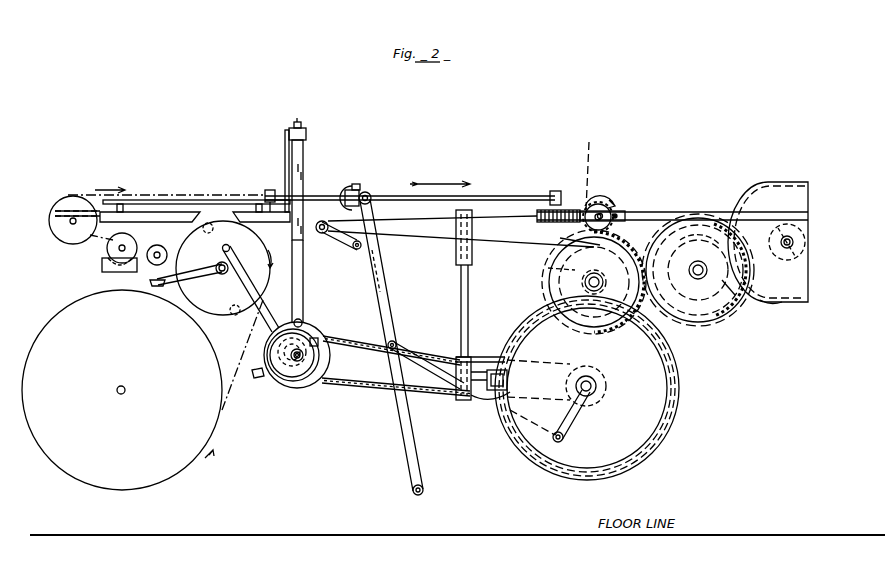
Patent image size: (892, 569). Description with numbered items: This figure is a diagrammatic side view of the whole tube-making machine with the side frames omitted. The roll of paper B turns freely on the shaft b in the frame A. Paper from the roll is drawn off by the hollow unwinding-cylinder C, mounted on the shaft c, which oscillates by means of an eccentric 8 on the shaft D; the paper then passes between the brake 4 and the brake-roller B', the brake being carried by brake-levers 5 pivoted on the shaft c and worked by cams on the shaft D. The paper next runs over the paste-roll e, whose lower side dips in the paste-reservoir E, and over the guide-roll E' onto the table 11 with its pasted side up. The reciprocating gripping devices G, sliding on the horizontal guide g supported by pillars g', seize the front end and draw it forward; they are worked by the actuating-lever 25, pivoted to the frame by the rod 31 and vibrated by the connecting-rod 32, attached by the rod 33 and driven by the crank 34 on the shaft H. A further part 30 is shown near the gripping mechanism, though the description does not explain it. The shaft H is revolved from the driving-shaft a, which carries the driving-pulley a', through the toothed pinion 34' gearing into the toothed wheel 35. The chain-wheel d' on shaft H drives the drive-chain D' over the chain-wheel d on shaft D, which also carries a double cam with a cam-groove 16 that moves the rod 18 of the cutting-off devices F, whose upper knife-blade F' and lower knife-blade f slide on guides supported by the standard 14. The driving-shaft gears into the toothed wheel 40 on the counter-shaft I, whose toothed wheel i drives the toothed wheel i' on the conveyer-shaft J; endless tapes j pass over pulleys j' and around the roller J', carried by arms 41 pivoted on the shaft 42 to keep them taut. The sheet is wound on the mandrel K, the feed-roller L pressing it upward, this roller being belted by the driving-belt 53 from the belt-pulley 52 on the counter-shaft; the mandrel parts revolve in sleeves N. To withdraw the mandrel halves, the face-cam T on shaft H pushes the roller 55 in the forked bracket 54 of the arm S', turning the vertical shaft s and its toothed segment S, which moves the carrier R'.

The frame A is at (140, 218).
The table 11 is at (186, 200).
The standard 14 is at (288, 134).
The cutting-off devices F is at (305, 179).
The upper knife-blade F' is at (313, 174).
The lower knife-blade f is at (306, 226).
The rod 18 is at (303, 300).
The gripping devices G is at (355, 188).
The horizontal guide g is at (410, 190).
The pillars g' is at (408, 191).
The feed-roller L is at (586, 166).
The carrier R' is at (614, 176).
The mandrel K is at (612, 212).
The clamp N is at (626, 214).
The toothed segment S is at (558, 207).
The driving-belt 53 is at (690, 250).
The guide-roll E' is at (64, 222).
The paste-roll e is at (108, 250).
The paste-reservoir E is at (107, 270).
The brake-roller B' is at (163, 244).
The unwinding-cylinder C is at (223, 268).
The shaft c is at (221, 274).
The brake-levers 5 is at (189, 281).
The brake 4 is at (152, 284).
The shaft b is at (118, 393).
The roll of paper B is at (122, 390).
The roller J' is at (316, 239).
The arms 41 is at (338, 246).
The shaft 42 is at (357, 250).
The actuating-lever 25 is at (393, 333).
The endless tapes j is at (461, 238).
The vertical shaft s is at (461, 300).
The bar 30 is at (560, 241).
The toothed pinion 34' is at (542, 263).
The driving-shaft a is at (571, 282).
The driving-pulley a' is at (569, 282).
The belt-pulley 52 is at (697, 274).
The counter-shaft I is at (698, 270).
The pulleys j' is at (778, 258).
The conveyer-shaft J is at (768, 242).
The toothed wheel i is at (733, 300).
The toothed wheel i' is at (771, 313).
The toothed wheel 40 is at (700, 320).
The cam-groove 16 is at (322, 327).
The rod 33 is at (397, 345).
The eccentric 8 is at (258, 377).
The shaft D is at (297, 377).
The chain-wheel d is at (309, 389).
The drive-chain D' is at (396, 371).
The connecting-rod 32 is at (500, 405).
The arm S' is at (480, 362).
The forked bracket 54 is at (507, 380).
The roller 55 is at (508, 386).
The crank 34 is at (579, 416).
The toothed wheel 35 is at (680, 374).
The shaft H is at (596, 386).
The chain-wheel d' is at (601, 398).
The face-cam T is at (512, 447).
The rod 31 is at (424, 490).